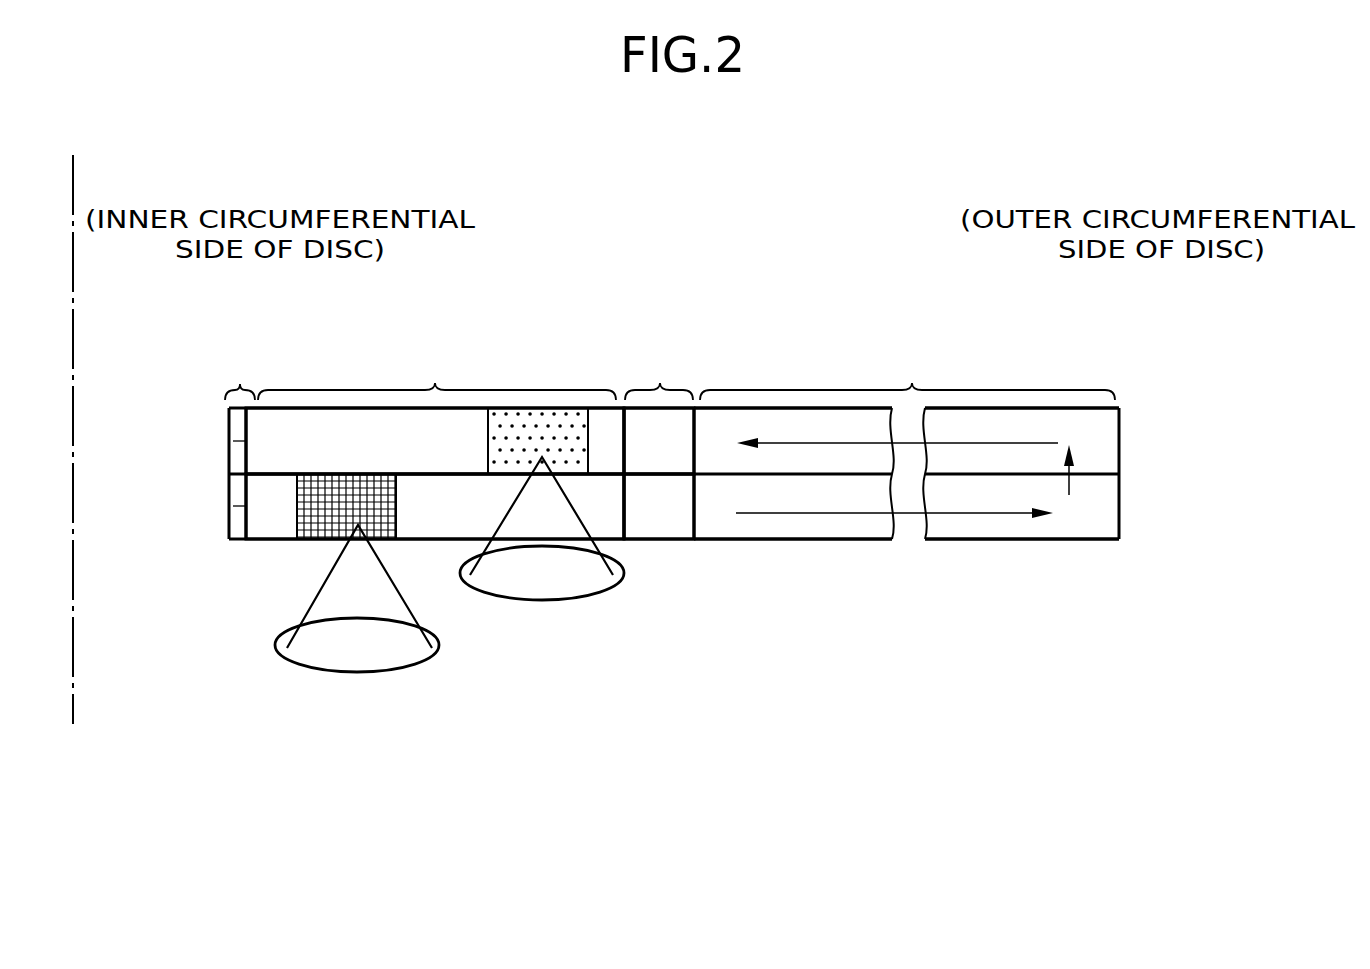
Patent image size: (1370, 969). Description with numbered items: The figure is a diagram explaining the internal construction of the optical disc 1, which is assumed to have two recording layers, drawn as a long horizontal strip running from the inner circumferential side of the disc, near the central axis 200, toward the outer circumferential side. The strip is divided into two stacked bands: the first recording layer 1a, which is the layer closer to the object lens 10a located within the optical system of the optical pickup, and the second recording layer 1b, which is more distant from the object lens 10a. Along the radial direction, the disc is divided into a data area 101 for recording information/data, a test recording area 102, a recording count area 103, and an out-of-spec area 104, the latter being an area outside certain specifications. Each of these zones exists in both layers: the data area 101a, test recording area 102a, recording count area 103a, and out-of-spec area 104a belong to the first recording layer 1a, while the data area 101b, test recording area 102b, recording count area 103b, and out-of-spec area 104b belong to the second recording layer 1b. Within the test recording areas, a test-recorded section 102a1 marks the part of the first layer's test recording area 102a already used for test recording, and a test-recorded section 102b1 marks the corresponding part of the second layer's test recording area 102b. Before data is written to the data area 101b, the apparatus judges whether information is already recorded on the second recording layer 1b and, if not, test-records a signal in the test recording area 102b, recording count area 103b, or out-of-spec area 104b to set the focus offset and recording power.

The optical disc 1 is at (903, 182).
The first recording layer 1a is at (1105, 510).
The second recording layer 1b is at (1105, 450).
The object lens 10a is at (358, 672).
The data area 101 is at (912, 384).
The data area of the first recording layer 101a is at (1043, 532).
The data area of the second recording layer 101b is at (1066, 418).
The test recording area 102 is at (435, 383).
The test recording area of the first recording layer 102a is at (451, 537).
The test-recorded section 102a1 is at (300, 537).
The test recording area of the second recording layer 102b is at (341, 425).
The test-recorded section 102b1 is at (545, 430).
The recording count area 103 is at (659, 384).
The recording count area of the first recording layer 103a is at (658, 530).
The recording count area of the second recording layer 103b is at (681, 420).
The out-of-spec area 104 is at (241, 386).
The out-of-spec area of the first recording layer 104a is at (233, 506).
The out-of-spec area of the second recording layer 104b is at (233, 441).
The central axis of the disc 200 is at (73, 182).